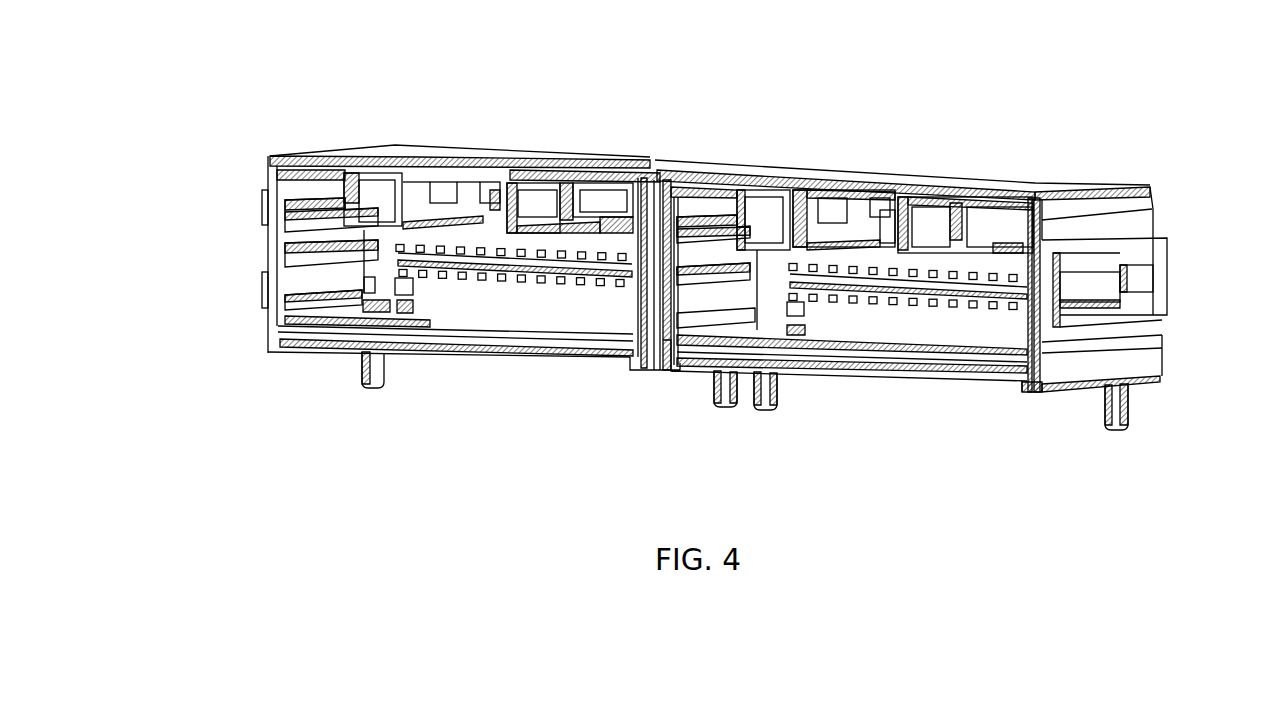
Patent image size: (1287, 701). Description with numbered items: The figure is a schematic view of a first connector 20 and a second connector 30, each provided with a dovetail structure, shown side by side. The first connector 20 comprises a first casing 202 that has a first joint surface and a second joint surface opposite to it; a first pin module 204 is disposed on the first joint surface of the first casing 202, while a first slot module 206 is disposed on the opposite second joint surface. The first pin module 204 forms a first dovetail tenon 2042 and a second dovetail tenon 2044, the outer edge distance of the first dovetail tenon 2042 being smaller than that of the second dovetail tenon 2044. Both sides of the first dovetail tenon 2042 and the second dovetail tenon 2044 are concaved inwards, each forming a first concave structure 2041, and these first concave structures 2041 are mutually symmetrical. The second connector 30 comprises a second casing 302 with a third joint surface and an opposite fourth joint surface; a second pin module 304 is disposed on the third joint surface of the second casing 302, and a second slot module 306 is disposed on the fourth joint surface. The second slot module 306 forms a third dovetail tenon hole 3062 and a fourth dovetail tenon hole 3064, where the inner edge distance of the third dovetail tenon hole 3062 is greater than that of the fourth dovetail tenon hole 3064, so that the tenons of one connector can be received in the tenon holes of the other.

The first connector 20 is at (797, 136).
The first casing 202 is at (893, 177).
The first pin module 204 is at (1150, 280).
The first concave structure 2041 is at (1053, 253).
The first dovetail tenon 2042 is at (1095, 318).
The second dovetail tenon 2044 is at (1122, 253).
The first slot module 206 is at (680, 350).
The second connector 30 is at (396, 117).
The second casing 302 is at (517, 153).
The second pin module 304 is at (626, 320).
The second slot module 306 is at (242, 257).
The third dovetail tenon hole 3062 is at (268, 190).
The fourth dovetail tenon hole 3064 is at (266, 287).